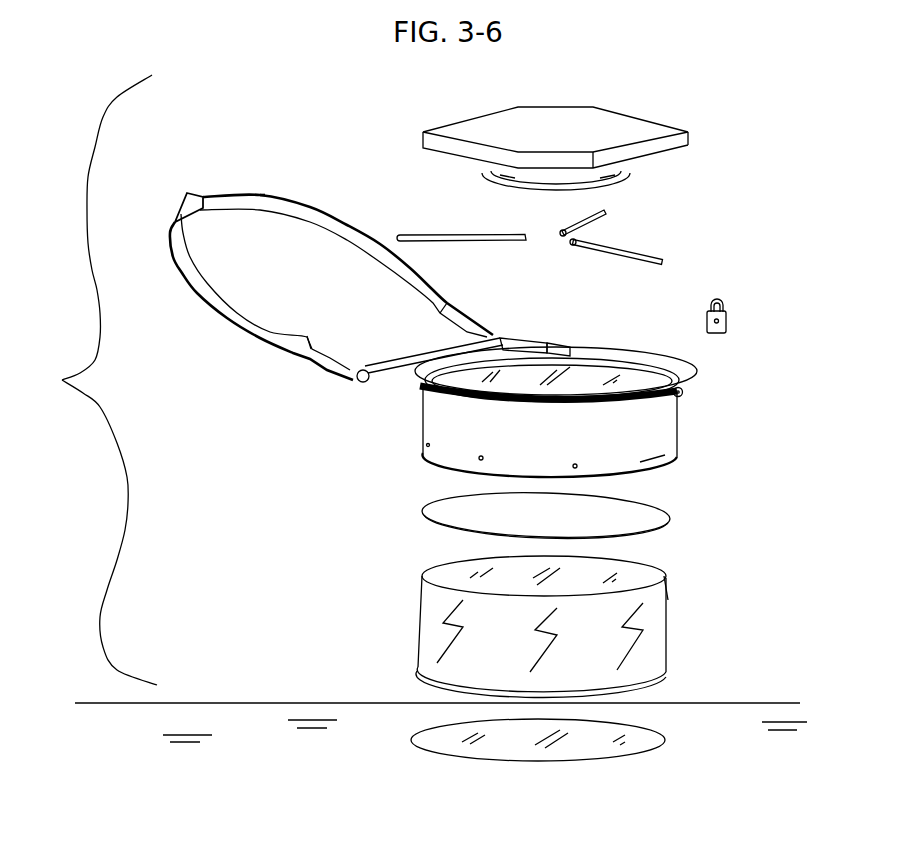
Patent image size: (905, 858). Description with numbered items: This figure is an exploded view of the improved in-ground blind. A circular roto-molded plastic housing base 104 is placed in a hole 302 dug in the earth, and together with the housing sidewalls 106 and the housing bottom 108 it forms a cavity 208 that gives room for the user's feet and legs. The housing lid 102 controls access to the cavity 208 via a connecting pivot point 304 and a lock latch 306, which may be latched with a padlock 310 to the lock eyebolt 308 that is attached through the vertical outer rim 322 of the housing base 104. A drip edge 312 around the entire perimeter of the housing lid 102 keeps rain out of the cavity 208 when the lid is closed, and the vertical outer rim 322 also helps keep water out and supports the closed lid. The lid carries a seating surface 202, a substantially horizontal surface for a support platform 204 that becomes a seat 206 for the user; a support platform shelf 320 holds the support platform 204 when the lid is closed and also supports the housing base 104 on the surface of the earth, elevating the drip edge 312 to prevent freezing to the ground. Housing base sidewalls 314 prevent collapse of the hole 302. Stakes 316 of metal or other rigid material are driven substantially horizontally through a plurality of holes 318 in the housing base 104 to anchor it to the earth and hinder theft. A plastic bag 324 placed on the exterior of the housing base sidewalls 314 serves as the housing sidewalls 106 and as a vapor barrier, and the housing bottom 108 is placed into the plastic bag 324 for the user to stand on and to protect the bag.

The housing lid 102 is at (252, 327).
The housing base 104 is at (415, 424).
The housing sidewalls 106 is at (422, 570).
The housing bottom 108 is at (423, 513).
The seating surface 202 is at (317, 294).
The support platform 204 is at (684, 130).
The seat 206 is at (563, 142).
The cavity 208 is at (628, 380).
The hole 302 is at (647, 735).
The connecting pivot point 304 is at (357, 377).
The lock latch 306 is at (187, 193).
The lock eyebolt 308 is at (683, 396).
The padlock 310 is at (727, 320).
The drip edge 312 is at (265, 198).
The housing base sidewalls 314 is at (677, 407).
The stakes 316 is at (605, 211).
The holes 318 is at (659, 451).
The support platform shelf 320 is at (573, 353).
The vertical outer rim 322 is at (507, 338).
The plastic bag 324 is at (668, 585).